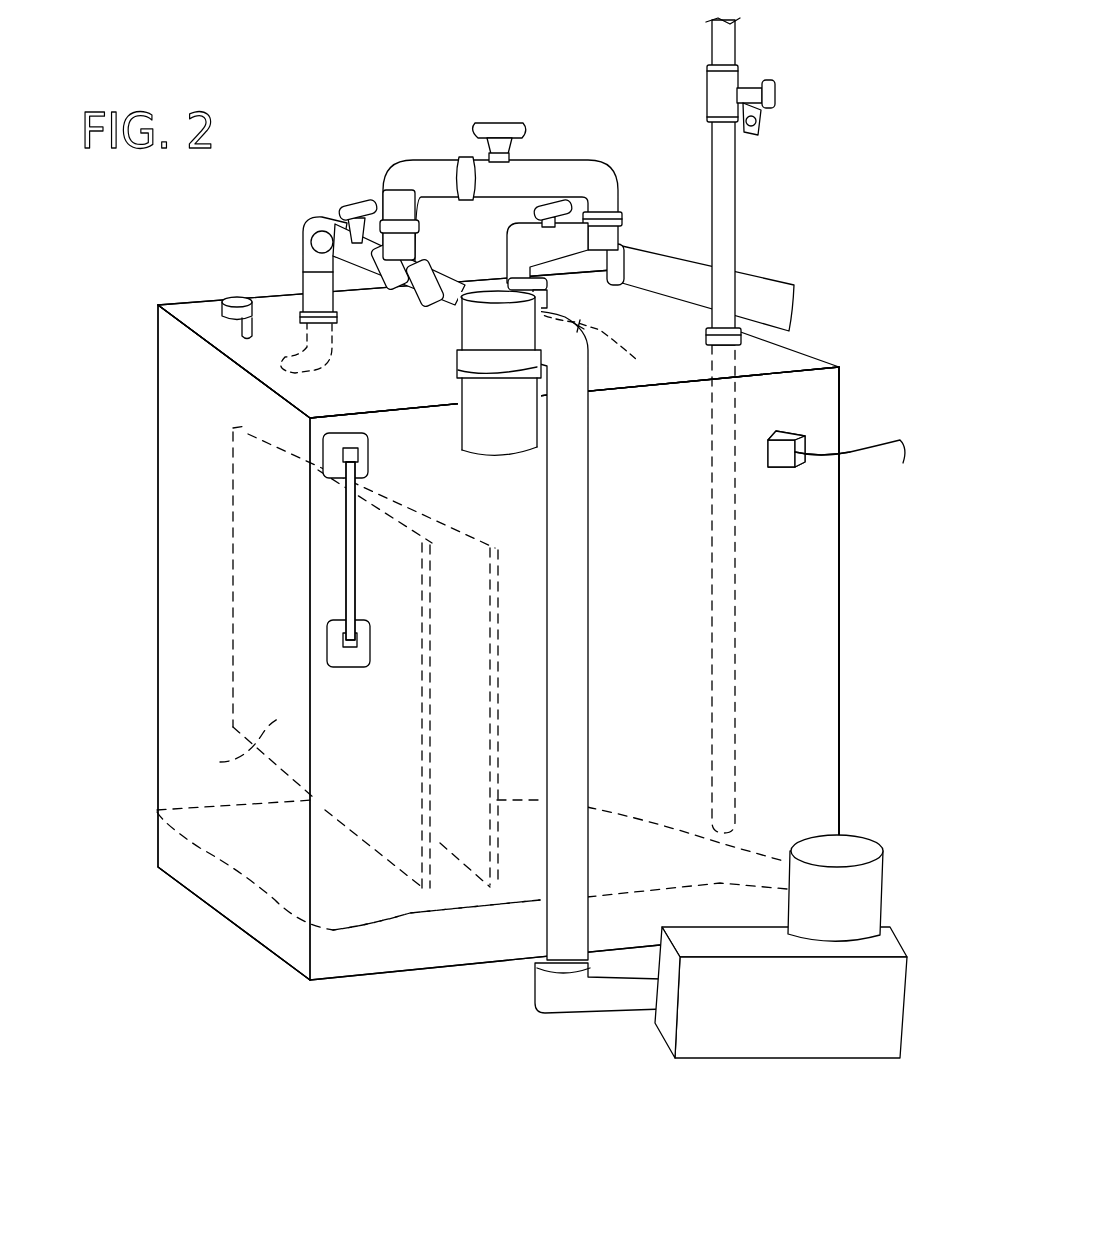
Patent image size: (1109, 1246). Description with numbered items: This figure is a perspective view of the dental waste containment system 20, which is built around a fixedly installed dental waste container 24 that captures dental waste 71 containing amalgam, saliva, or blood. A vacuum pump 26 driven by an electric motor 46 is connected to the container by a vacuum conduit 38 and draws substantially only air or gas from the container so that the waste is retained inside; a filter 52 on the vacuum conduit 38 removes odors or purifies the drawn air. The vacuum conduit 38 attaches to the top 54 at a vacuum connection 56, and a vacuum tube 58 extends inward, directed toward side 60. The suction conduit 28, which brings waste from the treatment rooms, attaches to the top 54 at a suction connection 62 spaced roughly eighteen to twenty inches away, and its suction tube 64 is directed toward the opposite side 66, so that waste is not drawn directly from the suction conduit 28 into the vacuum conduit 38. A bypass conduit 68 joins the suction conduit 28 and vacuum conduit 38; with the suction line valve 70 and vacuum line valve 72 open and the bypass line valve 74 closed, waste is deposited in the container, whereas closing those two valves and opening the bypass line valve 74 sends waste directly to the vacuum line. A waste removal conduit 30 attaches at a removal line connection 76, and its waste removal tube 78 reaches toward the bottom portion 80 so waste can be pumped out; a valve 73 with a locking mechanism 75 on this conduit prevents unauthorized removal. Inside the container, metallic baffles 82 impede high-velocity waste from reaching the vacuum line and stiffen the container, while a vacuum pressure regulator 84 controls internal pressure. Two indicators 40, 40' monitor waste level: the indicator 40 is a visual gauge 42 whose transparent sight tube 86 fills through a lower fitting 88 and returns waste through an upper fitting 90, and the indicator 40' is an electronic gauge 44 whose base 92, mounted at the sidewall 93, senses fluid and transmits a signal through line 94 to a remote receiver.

The dental waste containment system 20 is at (207, 268).
The dental waste container 24 is at (178, 412).
The vacuum pump 26 is at (760, 1033).
The suction conduit 28 is at (763, 294).
The waste removal conduit 30 is at (727, 231).
The vacuum conduit 38 is at (362, 262).
The indicator 40 is at (327, 658).
The indicator 40' is at (784, 479).
The visual gauge 42 is at (347, 545).
The electronic gauge 44 is at (803, 464).
The electric motor 46 is at (845, 848).
The filter 52 is at (498, 433).
The top 54 is at (767, 361).
The vacuum connection 56 is at (300, 317).
The vacuum tube 58 is at (313, 372).
The side 60 is at (180, 560).
The suction connection 62 is at (548, 288).
The suction tube 64 is at (589, 335).
The side 66 is at (840, 398).
The bypass conduit 68 is at (432, 182).
The suction line valve 70 is at (557, 210).
The dental waste 71 is at (427, 947).
The vacuum line valve 72 is at (352, 200).
The valve 73 is at (728, 82).
The bypass line valve 74 is at (499, 127).
The locking mechanism 75 is at (762, 127).
The removal line connection 76 is at (706, 342).
The waste removal tube 78 is at (717, 527).
The bottom portion 80 is at (258, 870).
The baffles 82 is at (453, 647).
The vacuum pressure regulator 84 is at (240, 312).
The sight tube 86 is at (354, 527).
The lower fitting 88 is at (340, 640).
The upper fitting 90 is at (360, 437).
The base 92 is at (768, 450).
The sidewall 93 is at (793, 652).
The line 94 is at (872, 455).